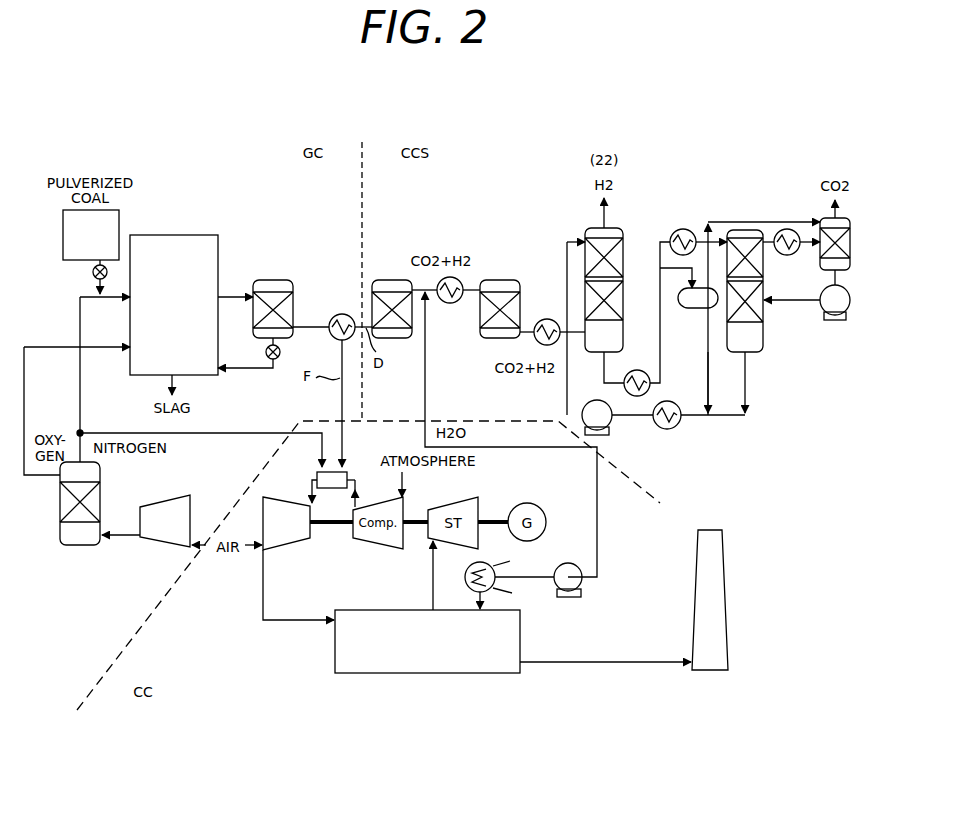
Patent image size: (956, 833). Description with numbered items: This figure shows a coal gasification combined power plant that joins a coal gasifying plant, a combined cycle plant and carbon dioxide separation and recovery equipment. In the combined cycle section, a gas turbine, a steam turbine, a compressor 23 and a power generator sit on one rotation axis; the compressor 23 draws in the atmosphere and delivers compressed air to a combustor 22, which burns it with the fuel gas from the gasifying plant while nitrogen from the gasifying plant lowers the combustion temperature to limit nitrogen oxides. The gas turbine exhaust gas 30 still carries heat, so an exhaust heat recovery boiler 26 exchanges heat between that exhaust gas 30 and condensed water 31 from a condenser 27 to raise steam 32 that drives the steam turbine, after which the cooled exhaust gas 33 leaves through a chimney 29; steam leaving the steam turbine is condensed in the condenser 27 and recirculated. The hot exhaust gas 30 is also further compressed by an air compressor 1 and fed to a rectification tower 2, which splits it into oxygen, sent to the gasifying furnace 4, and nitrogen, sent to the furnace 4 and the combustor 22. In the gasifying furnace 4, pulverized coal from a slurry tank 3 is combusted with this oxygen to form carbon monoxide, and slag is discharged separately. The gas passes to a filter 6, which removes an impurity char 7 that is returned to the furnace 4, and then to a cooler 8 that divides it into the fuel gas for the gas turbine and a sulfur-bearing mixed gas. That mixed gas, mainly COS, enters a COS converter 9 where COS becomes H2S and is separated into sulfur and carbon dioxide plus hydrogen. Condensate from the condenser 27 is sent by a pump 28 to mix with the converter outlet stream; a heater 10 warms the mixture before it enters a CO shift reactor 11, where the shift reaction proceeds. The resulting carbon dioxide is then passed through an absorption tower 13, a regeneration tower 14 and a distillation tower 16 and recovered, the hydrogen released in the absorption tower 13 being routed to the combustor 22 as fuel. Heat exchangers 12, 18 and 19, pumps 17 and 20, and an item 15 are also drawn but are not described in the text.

The air compressor 1 is at (190, 516).
The rectification tower 2 is at (78, 547).
The slurry tank 3 is at (63, 240).
The gasifying furnace 4 is at (170, 236).
The filter 6 is at (275, 280).
The impurity char 7 is at (246, 370).
The cooler 8 is at (340, 314).
The COS converter 9 is at (392, 280).
The heater 10 is at (452, 304).
The CO shift reactor 11 is at (505, 280).
The heat exchanger 12 is at (548, 319).
The absorption tower 13 is at (624, 250).
The regeneration tower 14 is at (690, 308).
The regeneration tower 15 is at (757, 352).
The distillation tower 16 is at (822, 218).
The circulation pump 17 is at (818, 315).
The heat exchanger 18 is at (640, 370).
The heat exchanger 19 is at (674, 426).
The circulation pump 20 is at (611, 422).
The combustor 22 is at (348, 475).
The compressor 23 is at (370, 544).
The exhaust heat recovery boiler 26 is at (427, 665).
The condenser 27 is at (466, 579).
The pump 28 is at (583, 582).
The chimney 29 is at (723, 568).
The exhaust gas 30 is at (295, 622).
The condensed water 31 is at (486, 595).
The steam 32 is at (432, 562).
The exhaust gas 33 is at (565, 660).